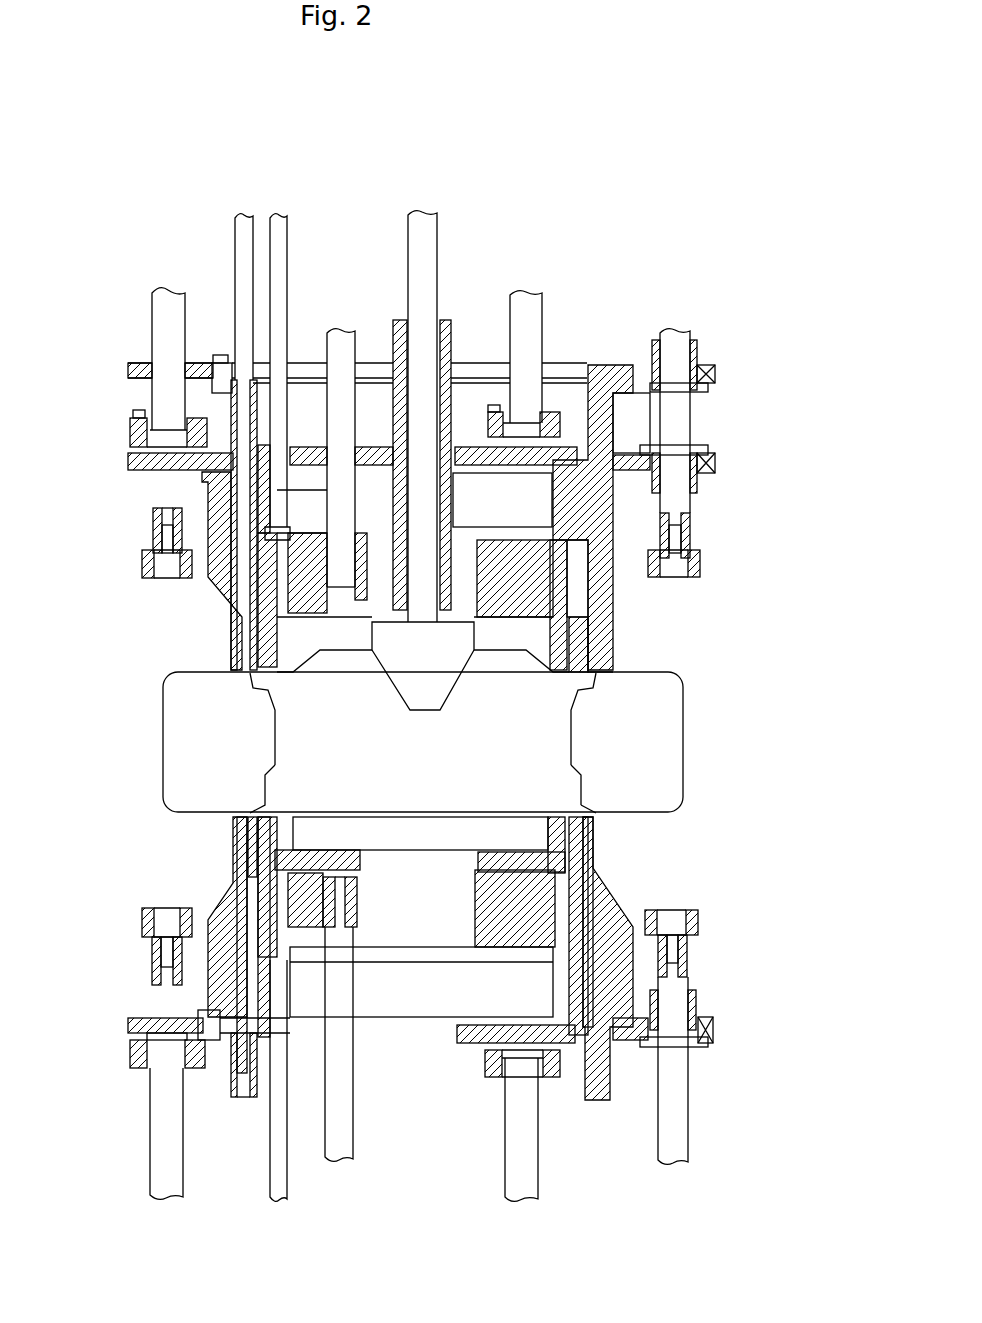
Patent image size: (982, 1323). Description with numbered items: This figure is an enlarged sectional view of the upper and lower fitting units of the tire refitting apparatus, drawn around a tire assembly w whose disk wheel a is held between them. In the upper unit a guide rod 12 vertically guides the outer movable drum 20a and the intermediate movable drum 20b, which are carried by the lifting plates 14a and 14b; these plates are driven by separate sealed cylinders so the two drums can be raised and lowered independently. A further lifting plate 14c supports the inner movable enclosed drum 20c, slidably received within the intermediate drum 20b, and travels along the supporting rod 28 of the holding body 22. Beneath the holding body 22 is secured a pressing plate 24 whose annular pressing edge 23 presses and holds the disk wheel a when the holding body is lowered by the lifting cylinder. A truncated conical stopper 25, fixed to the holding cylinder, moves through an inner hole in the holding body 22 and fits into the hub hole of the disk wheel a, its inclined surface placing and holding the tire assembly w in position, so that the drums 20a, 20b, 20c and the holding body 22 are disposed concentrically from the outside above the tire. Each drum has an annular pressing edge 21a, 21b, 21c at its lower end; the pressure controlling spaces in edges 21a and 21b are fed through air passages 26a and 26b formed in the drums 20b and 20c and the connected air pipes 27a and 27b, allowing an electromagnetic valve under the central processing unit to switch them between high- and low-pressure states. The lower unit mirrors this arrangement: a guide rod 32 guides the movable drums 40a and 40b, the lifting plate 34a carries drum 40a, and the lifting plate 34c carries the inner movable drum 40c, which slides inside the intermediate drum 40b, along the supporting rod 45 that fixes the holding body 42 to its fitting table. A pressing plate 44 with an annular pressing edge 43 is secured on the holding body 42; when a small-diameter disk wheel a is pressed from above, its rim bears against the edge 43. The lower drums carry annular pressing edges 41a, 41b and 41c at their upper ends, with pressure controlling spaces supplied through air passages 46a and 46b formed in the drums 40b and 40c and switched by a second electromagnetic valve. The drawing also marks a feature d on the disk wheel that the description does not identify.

The guide rod 12 is at (675, 432).
The lifting plate 14a is at (710, 474).
The lifting plate 14b is at (715, 373).
The lifting plate 14c is at (562, 436).
The movable drum 20a is at (210, 562).
The movable drum 20b is at (598, 425).
The inner movable enclosed drum 20c is at (573, 615).
The annular pressing edge 21a is at (245, 658).
The annular pressing edge 21b is at (580, 645).
The annular pressing edge 21c is at (585, 668).
The holding body 22 is at (300, 578).
The annular pressing edge 23 is at (595, 628).
The pressing plate 24 is at (265, 690).
The truncated conical stopper 25 is at (427, 698).
The air passage 26a is at (242, 440).
The air passage 26b is at (270, 512).
The air pipe 27a is at (243, 243).
The air pipe 27b is at (278, 243).
The supporting rod 28 is at (340, 393).
The guide rod 32 is at (670, 1105).
The lifting plate 34a is at (708, 1040).
The lifting plate 34c is at (512, 1037).
The movable drum 40a is at (617, 885).
The movable drum 40b is at (592, 947).
The inner movable drum 40c is at (577, 831).
The annular pressing edge 41a is at (238, 825).
The annular pressing edge 41b is at (236, 850).
The annular pressing edge 41c is at (583, 822).
The holding body 42 is at (245, 1035).
The annular pressing edge 43 is at (585, 815).
The pressing plate 44 is at (552, 857).
The supporting rod 45 is at (338, 1085).
The air passage 46a is at (242, 1070).
The air passage 46b is at (265, 970).
The disk wheel a is at (590, 805).
The workpiece wall d is at (582, 790).
The tire assembly w is at (160, 765).